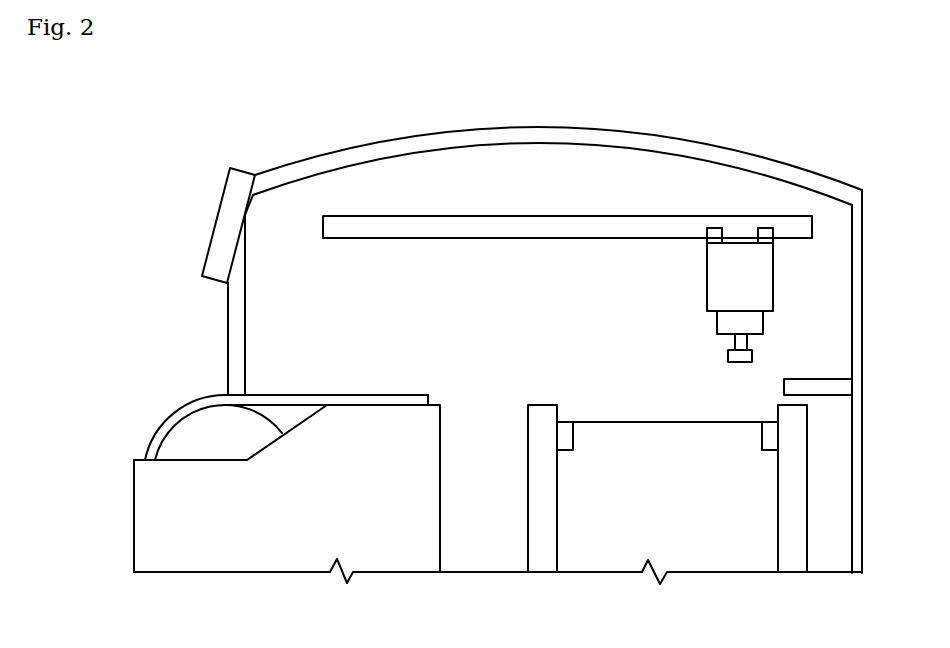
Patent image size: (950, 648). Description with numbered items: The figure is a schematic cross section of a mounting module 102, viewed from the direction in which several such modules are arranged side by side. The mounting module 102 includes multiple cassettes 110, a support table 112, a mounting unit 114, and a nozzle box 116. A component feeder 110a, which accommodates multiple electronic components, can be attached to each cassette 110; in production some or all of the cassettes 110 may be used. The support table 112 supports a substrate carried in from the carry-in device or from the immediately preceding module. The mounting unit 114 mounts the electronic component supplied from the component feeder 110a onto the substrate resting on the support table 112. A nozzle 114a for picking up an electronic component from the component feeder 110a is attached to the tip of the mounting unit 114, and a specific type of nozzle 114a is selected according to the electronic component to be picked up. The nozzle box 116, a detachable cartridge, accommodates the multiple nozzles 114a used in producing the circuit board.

The mounting module 102 is at (883, 92).
The cassette 110 is at (143, 517).
The component feeder 110a is at (158, 408).
The support table 112 is at (542, 527).
The mounting unit 114 is at (763, 279).
The nozzle 114a is at (752, 355).
The nozzle box 116 is at (832, 375).